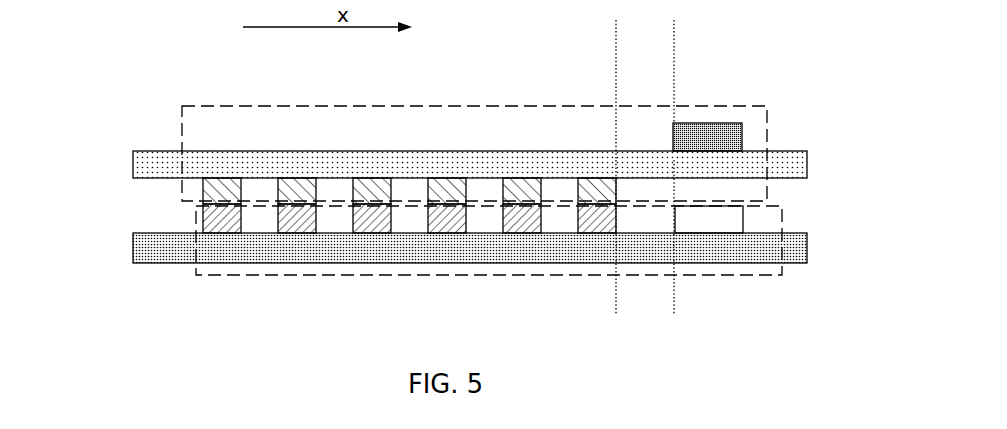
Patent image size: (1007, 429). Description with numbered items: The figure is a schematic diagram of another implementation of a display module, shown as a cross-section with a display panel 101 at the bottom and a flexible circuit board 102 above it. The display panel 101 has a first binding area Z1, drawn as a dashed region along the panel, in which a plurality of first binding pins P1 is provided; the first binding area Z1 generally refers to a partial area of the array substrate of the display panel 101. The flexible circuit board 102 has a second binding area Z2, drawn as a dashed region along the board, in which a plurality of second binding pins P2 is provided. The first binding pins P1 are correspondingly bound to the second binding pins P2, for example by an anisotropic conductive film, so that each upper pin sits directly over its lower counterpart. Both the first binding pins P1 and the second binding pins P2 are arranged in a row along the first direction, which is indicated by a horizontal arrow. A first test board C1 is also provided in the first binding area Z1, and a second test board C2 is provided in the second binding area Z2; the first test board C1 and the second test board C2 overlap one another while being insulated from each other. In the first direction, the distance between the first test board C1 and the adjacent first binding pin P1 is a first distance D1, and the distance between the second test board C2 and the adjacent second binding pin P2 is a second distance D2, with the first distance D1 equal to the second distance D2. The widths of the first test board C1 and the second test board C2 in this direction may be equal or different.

The display panel 101 is at (437, 262).
The flexible circuit board 102 is at (427, 137).
The first binding pins P1 is at (409, 260).
The second binding pins P2 is at (409, 136).
The first binding area Z1 is at (489, 272).
The second binding area Z2 is at (474, 133).
The first test board C1 is at (748, 258).
The second test board C2 is at (745, 101).
The first distance D1 is at (673, 293).
The second distance D2 is at (673, 68).